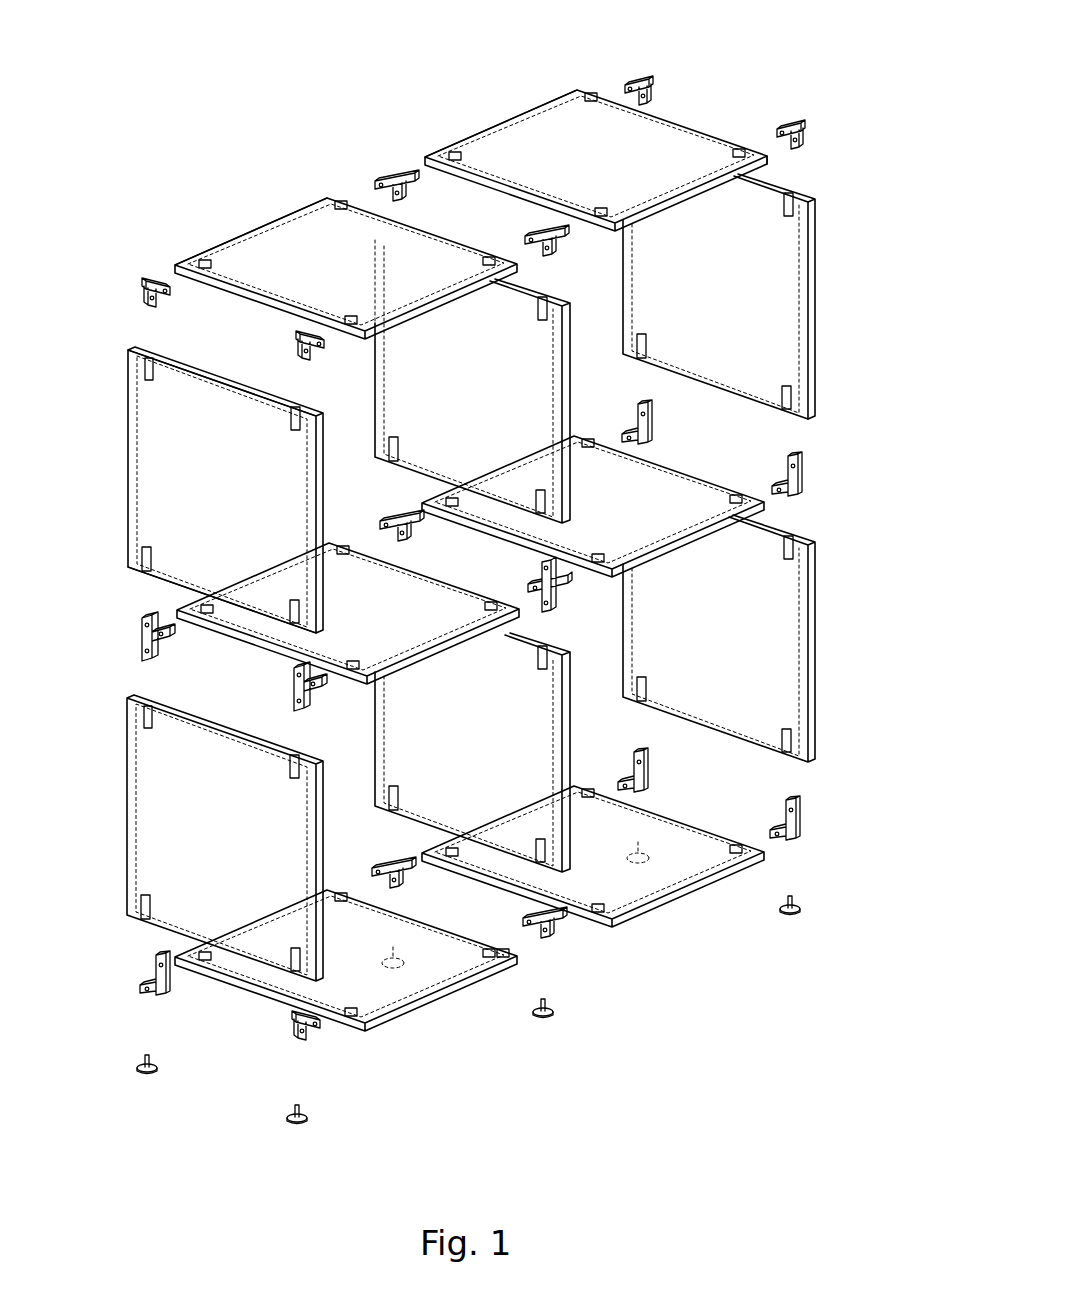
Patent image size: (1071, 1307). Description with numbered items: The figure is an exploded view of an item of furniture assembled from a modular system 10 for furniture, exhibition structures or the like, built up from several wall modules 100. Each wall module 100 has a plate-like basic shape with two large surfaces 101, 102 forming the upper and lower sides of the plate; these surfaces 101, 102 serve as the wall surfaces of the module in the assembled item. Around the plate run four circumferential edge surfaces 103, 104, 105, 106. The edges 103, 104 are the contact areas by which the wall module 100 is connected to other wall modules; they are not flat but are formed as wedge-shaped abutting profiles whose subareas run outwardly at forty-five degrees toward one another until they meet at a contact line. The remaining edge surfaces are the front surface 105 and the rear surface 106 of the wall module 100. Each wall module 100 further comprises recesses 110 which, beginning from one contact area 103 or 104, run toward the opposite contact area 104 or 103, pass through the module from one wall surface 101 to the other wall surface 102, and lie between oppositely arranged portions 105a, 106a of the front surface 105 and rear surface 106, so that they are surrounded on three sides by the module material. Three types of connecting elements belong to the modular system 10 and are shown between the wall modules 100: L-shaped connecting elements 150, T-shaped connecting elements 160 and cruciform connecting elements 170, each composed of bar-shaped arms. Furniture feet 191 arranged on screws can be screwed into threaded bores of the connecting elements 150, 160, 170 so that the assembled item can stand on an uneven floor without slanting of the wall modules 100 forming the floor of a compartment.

The modular system 10 is at (620, 1033).
The wall module 100 is at (560, 143).
The large surface 101 is at (805, 250).
The large surface 102 is at (822, 246).
The edge surface 103 is at (240, 280).
The edge surface 104 is at (152, 578).
The front surface 105 is at (778, 162).
The portion of the front surface 105a is at (331, 434).
The rear surface 106 is at (481, 131).
The portion of the rear surface 106a is at (128, 368).
The recess 110 is at (796, 540).
The L-shaped connecting element 150 is at (796, 122).
The T-shaped connecting element 160 is at (376, 182).
The cruciform connecting element 170 is at (565, 580).
The furniture foot 191 is at (790, 922).